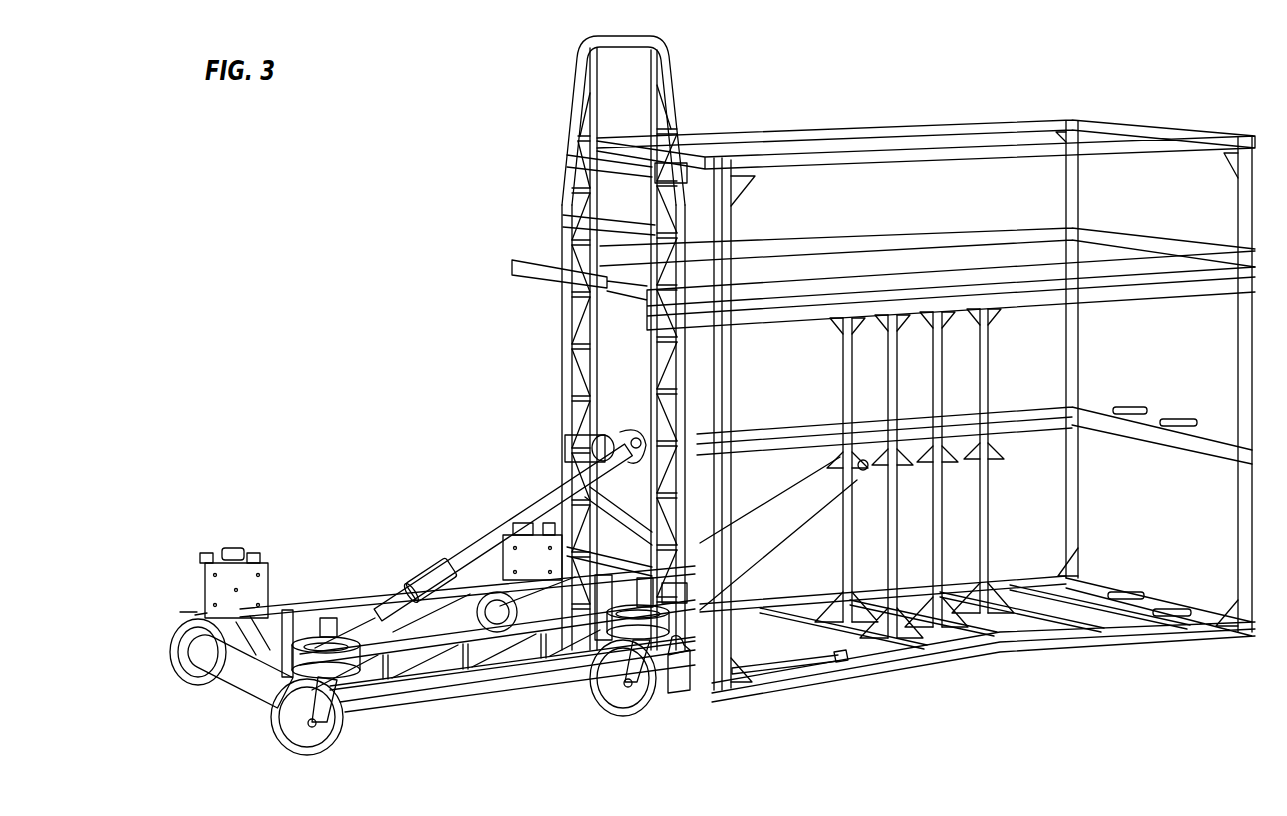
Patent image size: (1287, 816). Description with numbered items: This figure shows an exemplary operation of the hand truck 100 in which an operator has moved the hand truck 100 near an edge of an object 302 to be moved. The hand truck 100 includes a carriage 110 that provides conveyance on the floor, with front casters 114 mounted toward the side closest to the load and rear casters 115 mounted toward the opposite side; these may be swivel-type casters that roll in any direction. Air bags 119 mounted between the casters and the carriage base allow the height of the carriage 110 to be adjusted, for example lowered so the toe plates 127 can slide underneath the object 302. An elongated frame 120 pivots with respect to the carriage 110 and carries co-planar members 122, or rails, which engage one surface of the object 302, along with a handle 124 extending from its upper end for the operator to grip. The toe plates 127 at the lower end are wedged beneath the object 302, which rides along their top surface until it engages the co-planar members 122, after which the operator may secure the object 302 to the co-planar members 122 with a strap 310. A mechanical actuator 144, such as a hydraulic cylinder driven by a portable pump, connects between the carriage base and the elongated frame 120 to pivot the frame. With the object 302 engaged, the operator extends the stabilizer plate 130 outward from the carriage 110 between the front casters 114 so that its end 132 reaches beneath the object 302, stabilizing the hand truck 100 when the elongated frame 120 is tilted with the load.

The hand truck 100 is at (391, 384).
The carriage 110 is at (436, 719).
The front casters 114 is at (628, 717).
The rear casters 115 is at (173, 657).
The air bags 119 is at (270, 700).
The elongated frame 120 is at (549, 350).
The co-planar members 122 is at (700, 398).
The handle 124 is at (632, 36).
The toe plates 127 is at (678, 688).
The stabilizer plate 130 is at (798, 665).
The first end 132 is at (843, 663).
The mechanical actuator 144 is at (407, 578).
The object 302 is at (1138, 122).
The strap 310 is at (1217, 265).